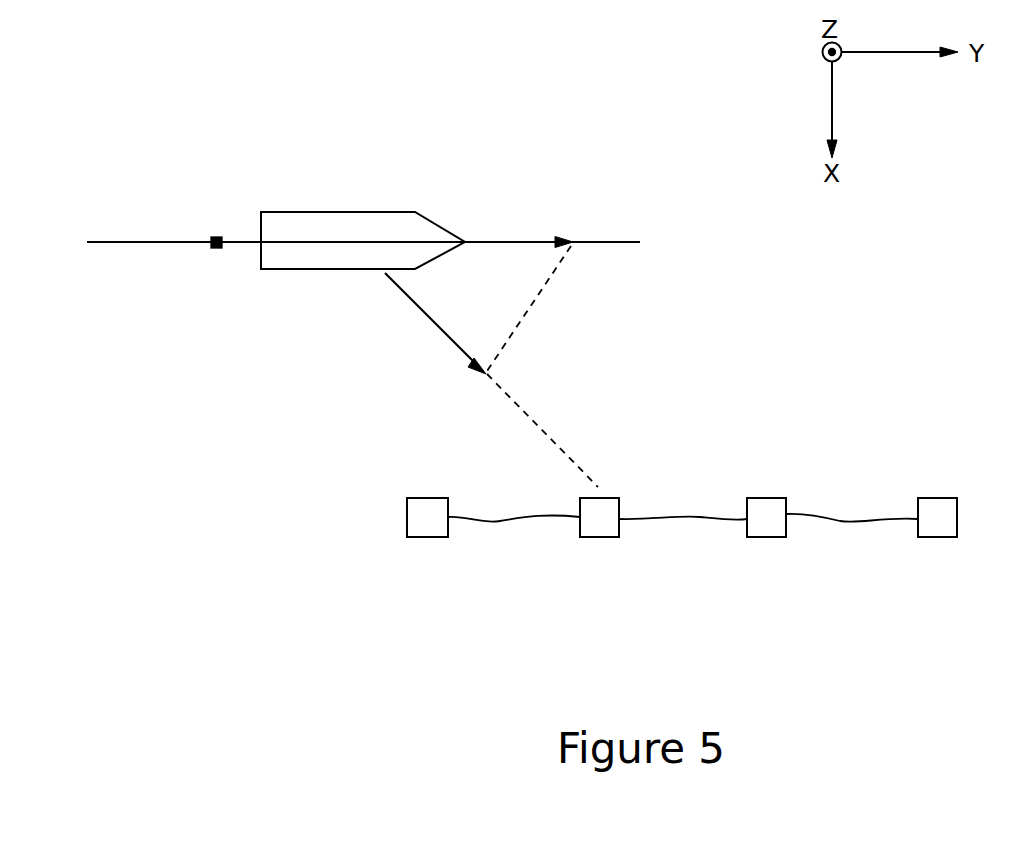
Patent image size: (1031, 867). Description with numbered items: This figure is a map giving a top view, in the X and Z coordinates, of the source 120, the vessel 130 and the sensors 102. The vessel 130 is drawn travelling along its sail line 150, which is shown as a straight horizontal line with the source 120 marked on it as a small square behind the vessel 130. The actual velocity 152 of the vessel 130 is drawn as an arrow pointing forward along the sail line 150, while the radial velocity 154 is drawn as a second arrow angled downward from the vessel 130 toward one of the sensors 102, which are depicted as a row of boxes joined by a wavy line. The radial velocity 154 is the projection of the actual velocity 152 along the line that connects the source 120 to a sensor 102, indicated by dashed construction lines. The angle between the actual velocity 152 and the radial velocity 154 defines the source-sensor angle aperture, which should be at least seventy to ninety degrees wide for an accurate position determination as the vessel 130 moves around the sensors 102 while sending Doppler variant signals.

The sensor 102 is at (425, 537).
The source 120 is at (217, 248).
The vessel 130 is at (315, 270).
The sail line 150 is at (605, 242).
The actual velocity 152 is at (498, 242).
The radial velocity 154 is at (408, 300).